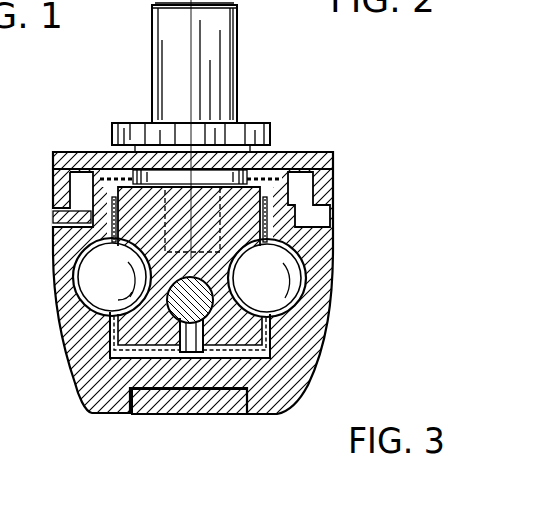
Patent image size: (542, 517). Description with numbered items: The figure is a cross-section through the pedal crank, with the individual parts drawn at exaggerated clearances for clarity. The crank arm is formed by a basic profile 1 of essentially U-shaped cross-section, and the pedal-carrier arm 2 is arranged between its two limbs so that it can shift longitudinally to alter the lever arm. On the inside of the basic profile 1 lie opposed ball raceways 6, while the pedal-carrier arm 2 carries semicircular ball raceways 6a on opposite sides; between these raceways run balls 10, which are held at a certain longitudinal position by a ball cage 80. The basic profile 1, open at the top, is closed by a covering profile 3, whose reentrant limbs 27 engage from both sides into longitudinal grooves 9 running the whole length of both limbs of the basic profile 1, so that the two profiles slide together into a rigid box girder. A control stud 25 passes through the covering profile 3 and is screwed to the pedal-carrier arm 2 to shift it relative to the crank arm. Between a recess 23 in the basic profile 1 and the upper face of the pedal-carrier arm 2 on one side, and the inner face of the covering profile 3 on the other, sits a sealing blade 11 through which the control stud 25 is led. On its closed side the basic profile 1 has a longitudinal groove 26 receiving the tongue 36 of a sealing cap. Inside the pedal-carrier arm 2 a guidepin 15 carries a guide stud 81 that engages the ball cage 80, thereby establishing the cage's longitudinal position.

The basic profile 1 is at (333, 338).
The pedal-carrier arm 2 is at (279, 344).
The covering profile 3 is at (333, 215).
The ball raceways 6 is at (290, 293).
The semicircular ball raceways 6a is at (236, 270).
The longitudinal grooves 9 is at (60, 216).
The balls 10 is at (96, 285).
The sealing blade 11 is at (273, 178).
The guidepin 15 is at (204, 332).
The recess 23 is at (104, 167).
The control stud 25 is at (218, 44).
The longitudinal groove 26 is at (162, 393).
The reentrant limbs 27 is at (66, 224).
The tongue 36 is at (140, 415).
The ball cage 80 is at (112, 354).
The guide stud 81 is at (191, 322).